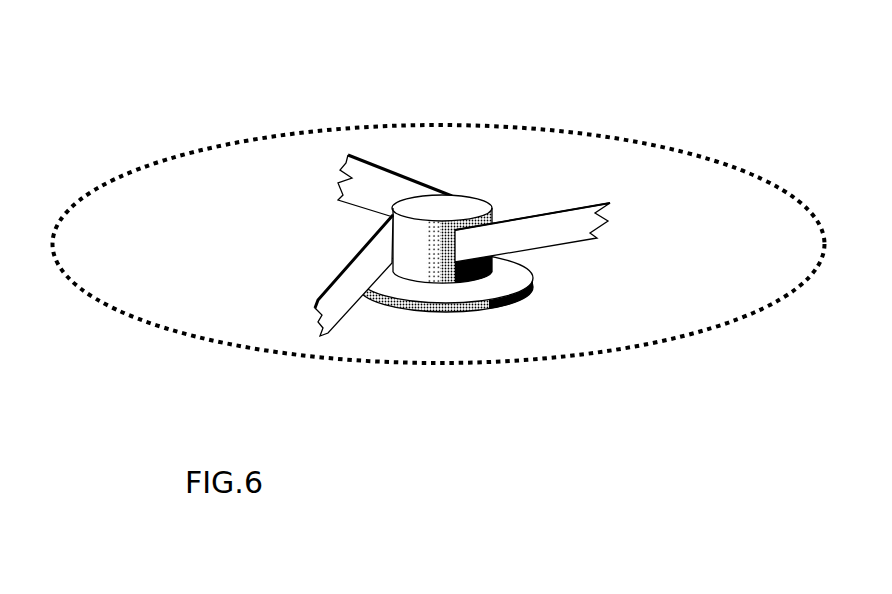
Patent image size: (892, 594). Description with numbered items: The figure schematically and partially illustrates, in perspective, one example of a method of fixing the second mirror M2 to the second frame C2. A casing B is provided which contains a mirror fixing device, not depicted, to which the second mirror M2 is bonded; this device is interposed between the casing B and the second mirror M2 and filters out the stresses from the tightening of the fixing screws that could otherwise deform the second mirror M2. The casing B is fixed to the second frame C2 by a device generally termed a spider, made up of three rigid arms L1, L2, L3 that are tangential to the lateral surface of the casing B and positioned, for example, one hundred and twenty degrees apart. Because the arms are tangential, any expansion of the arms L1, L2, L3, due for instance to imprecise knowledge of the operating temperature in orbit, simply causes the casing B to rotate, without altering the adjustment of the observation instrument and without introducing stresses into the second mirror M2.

The second frame C2 is at (338, 128).
The casing B is at (467, 207).
The rigid arm L1 is at (558, 247).
The rigid arm L2 is at (372, 192).
The rigid arm L3 is at (352, 288).
The second mirror M2 is at (478, 308).